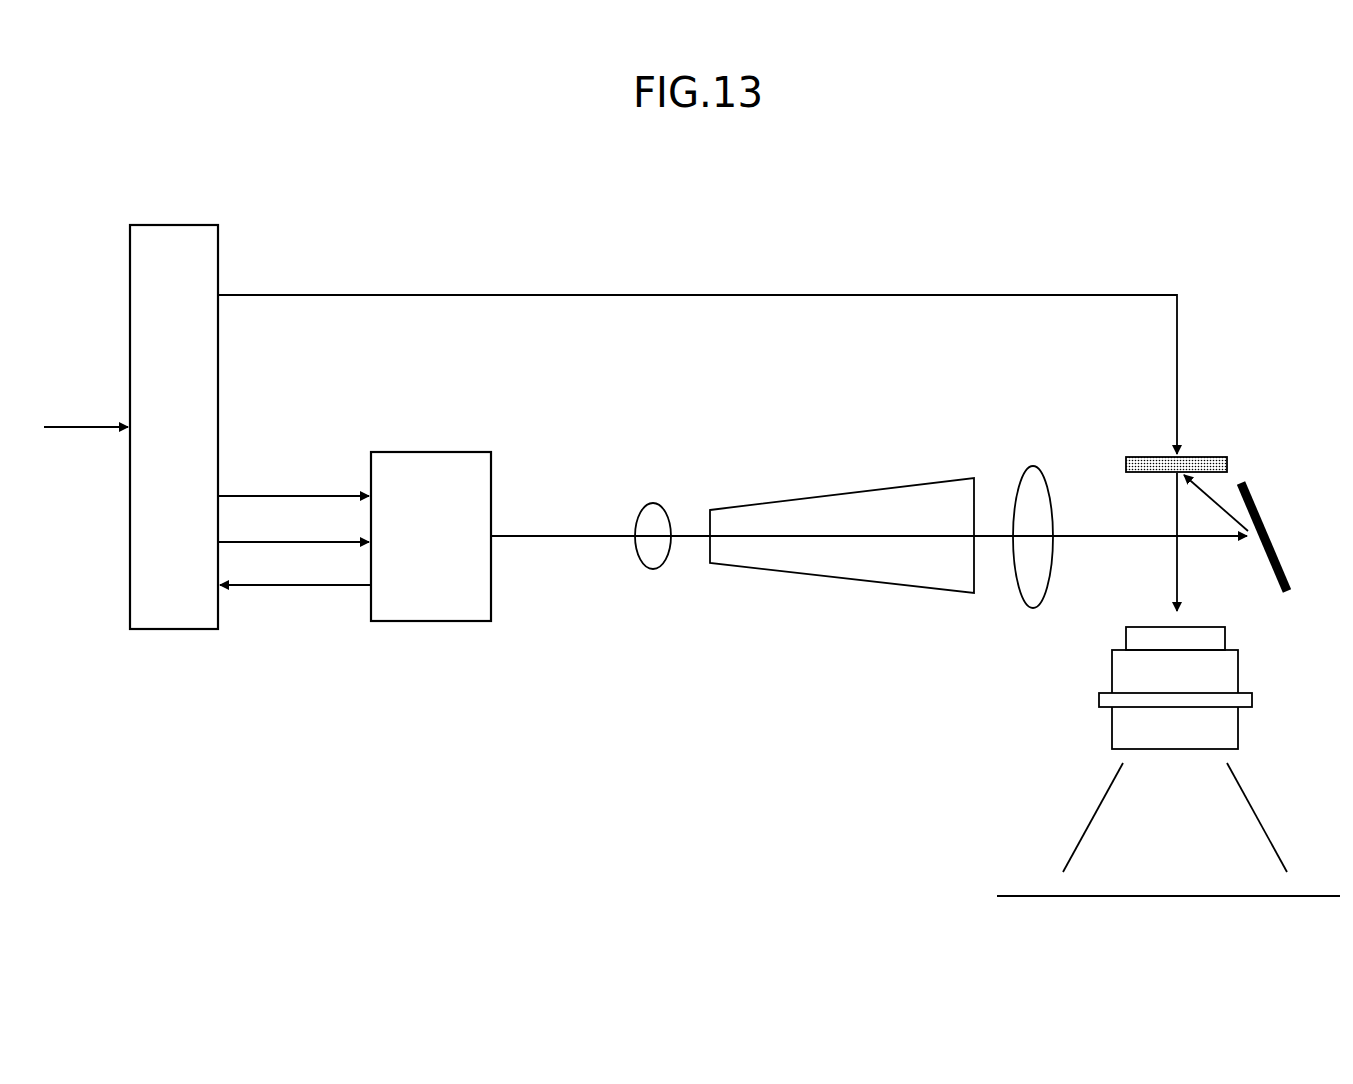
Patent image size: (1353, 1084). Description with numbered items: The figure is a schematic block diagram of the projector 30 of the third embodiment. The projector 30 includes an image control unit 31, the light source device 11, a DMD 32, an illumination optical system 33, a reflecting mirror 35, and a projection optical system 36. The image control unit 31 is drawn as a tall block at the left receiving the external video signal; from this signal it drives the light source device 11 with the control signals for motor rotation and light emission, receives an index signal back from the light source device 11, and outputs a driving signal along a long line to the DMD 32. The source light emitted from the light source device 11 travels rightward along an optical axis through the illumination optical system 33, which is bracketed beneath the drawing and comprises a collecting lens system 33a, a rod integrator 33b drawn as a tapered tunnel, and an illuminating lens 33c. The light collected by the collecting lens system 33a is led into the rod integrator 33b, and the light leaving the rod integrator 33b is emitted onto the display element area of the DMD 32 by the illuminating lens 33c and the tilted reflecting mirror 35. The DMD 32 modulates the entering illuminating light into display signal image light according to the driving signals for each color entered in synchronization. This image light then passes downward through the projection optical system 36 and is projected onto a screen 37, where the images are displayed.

The projector 30 is at (662, 220).
The image control unit 31 is at (185, 225).
The light source device 11 is at (467, 452).
The illumination optical system 33 is at (622, 609).
The collecting lens system 33a is at (655, 503).
The rod integrator 33b is at (847, 490).
The illuminating lens 33c is at (1029, 466).
The DMD (Digital Micromirror Device) 32 is at (1218, 457).
The reflecting mirror 35 is at (1265, 525).
The projection optical system 36 is at (1238, 660).
The screen 37 is at (1005, 895).